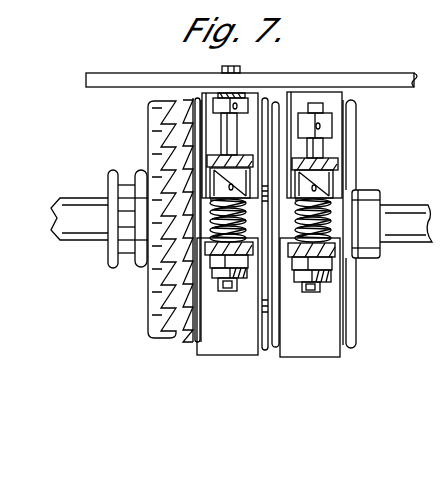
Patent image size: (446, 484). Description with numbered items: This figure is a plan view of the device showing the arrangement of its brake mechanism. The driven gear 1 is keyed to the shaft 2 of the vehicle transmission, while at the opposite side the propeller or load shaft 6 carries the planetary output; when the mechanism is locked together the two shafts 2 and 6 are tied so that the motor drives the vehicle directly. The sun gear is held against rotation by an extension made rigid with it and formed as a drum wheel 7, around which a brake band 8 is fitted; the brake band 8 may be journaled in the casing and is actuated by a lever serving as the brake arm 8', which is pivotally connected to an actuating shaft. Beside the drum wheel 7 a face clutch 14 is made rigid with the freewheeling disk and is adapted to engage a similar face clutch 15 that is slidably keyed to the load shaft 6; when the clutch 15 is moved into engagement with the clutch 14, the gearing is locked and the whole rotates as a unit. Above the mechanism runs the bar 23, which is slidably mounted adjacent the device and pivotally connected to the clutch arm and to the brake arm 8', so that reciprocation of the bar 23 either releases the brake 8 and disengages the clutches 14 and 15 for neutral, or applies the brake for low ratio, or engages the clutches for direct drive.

The driven gear 1 is at (352, 148).
The transmission shaft 2 is at (406, 223).
The load shaft 6 is at (107, 221).
The drum wheel 7 is at (270, 220).
The brake band 8 is at (213, 307).
The brake arm 8' is at (251, 79).
The face clutch 14 is at (152, 280).
The face clutch 15 is at (155, 323).
The bar 23 is at (386, 87).